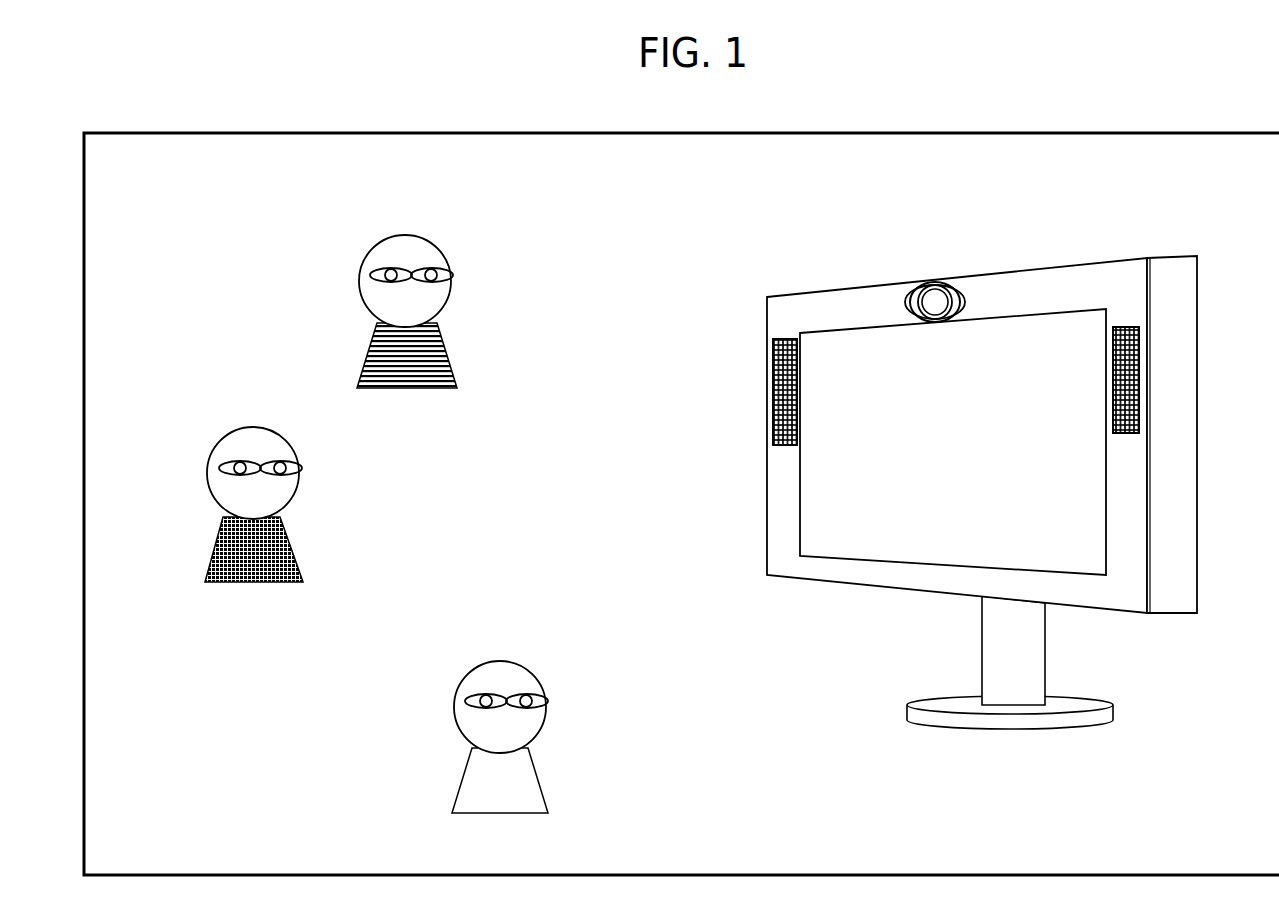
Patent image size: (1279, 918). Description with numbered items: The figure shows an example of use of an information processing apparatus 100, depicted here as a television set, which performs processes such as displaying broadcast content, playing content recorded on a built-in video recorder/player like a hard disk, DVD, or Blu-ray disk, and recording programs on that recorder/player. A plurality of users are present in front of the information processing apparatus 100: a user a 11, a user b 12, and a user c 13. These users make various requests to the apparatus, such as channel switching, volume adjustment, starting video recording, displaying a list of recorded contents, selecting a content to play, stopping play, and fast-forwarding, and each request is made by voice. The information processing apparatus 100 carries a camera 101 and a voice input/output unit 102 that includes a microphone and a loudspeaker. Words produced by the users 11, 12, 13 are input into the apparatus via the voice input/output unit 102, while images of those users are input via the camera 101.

The user a 11 is at (392, 234).
The user b 12 is at (240, 430).
The user c 13 is at (462, 684).
The information processing apparatus 100 is at (943, 458).
The camera 101 is at (933, 281).
The voice input/output unit 102 is at (777, 387).